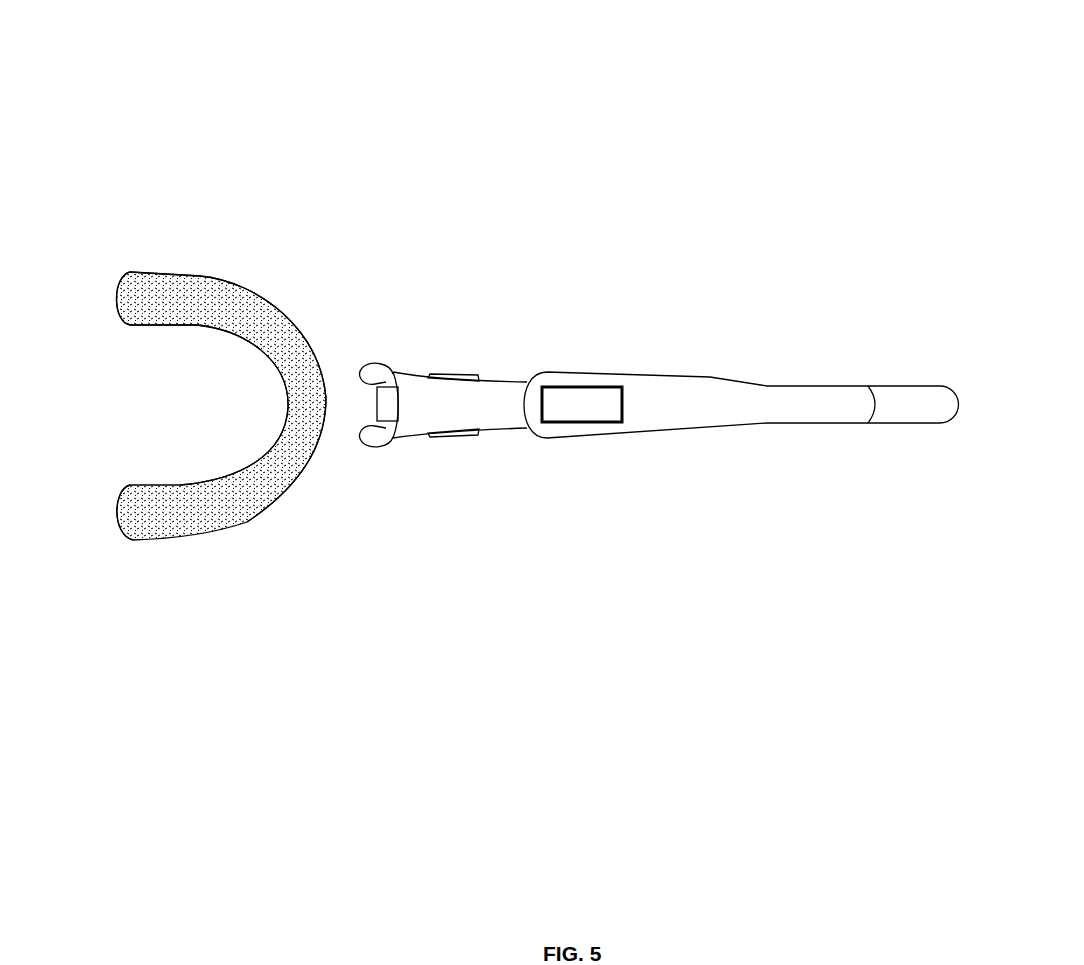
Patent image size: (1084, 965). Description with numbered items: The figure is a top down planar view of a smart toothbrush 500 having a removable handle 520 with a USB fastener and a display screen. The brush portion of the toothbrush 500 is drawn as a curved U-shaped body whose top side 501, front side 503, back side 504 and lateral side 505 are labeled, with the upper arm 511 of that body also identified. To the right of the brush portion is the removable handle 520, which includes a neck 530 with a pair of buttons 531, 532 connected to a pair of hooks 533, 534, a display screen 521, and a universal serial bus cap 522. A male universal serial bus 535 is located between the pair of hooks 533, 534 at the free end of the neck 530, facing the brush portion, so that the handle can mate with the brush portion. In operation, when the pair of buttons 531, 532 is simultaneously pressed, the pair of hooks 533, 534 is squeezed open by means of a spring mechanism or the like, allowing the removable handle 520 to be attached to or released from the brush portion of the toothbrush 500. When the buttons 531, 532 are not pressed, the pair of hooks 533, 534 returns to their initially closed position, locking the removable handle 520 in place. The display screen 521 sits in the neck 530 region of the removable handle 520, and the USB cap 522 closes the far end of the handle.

The toothbrush with removable handle 500 is at (590, 110).
The top side 501 is at (170, 523).
The front side 503 is at (318, 352).
The back side 504 is at (120, 287).
The lateral side 505 is at (212, 328).
The upper arm of mouthpiece 511 is at (203, 287).
The removable handle 520 is at (770, 385).
The display screen 521 is at (593, 385).
The USB cap 522 is at (893, 385).
The toothbrush neck 530 is at (510, 437).
The first button in the pair of locking/releasing buttons 531 is at (458, 373).
The second button in the pair of locking/releasing buttons 532 is at (450, 435).
The first hook in the pair of hooks 533 is at (382, 365).
The second hook in the pair of hooks 534 is at (368, 443).
The male universal serial bus (USB) 535 is at (375, 395).